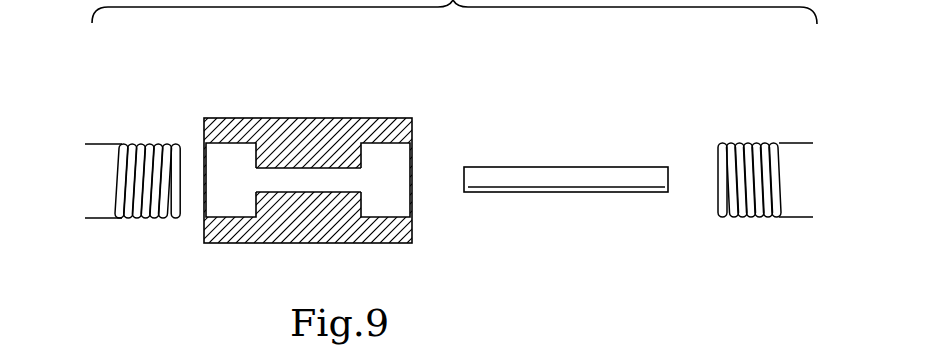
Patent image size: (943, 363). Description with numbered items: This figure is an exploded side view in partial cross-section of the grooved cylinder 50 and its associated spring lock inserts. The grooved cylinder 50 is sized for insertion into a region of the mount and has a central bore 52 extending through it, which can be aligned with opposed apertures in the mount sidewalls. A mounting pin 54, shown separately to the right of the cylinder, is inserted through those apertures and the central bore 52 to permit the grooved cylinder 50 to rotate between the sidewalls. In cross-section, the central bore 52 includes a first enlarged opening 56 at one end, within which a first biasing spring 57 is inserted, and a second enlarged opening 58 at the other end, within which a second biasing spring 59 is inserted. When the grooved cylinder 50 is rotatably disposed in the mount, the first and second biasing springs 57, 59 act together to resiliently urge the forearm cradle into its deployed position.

The grooved cylinder 50 is at (372, 118).
The central bore 52 is at (298, 183).
The mounting pin 54 is at (554, 174).
The first enlarged opening 56 is at (215, 157).
The first biasing spring 57 is at (152, 146).
The second enlarged opening 58 is at (393, 195).
The second biasing spring 59 is at (745, 217).